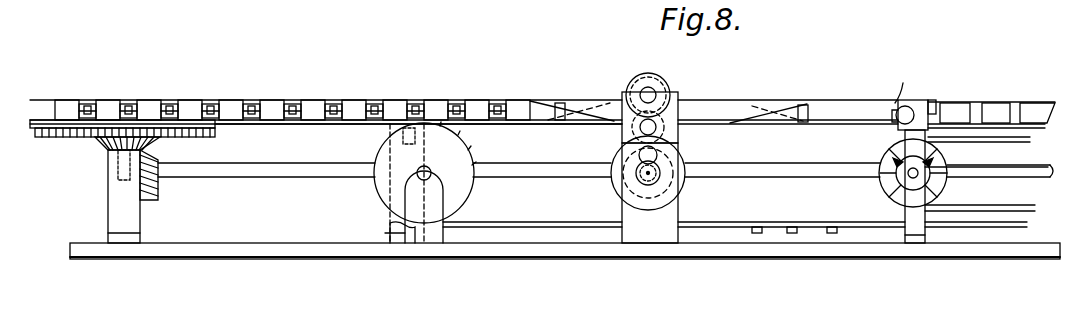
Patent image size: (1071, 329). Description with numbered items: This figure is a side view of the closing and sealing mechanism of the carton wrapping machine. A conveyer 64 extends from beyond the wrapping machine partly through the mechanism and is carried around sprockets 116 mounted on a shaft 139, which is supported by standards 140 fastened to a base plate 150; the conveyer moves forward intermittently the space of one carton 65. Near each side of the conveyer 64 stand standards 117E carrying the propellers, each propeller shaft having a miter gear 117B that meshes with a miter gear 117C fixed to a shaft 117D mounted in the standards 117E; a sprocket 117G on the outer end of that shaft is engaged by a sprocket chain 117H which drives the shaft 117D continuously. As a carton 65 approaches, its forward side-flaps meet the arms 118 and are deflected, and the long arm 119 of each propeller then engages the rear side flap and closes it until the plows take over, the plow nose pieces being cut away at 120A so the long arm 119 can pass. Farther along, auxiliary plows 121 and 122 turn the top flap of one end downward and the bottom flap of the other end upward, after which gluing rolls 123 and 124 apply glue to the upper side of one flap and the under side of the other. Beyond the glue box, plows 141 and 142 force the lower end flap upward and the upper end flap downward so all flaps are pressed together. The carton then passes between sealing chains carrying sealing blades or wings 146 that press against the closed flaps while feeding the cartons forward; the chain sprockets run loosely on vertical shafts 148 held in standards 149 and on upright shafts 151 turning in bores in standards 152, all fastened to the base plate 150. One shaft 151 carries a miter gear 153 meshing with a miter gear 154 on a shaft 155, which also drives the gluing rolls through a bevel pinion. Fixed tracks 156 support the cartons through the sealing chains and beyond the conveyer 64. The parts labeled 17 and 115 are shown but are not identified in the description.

The rail strip 17 is at (38, 130).
The conveyer 64 is at (1040, 130).
The carton 65 is at (1030, 103).
The support block 115 is at (832, 233).
The sprockets 116 is at (463, 160).
The miter gear 117B is at (895, 160).
The miter gear 117C is at (895, 178).
The shaft 117D is at (920, 180).
The standards 117E is at (905, 225).
The sprocket 117G is at (943, 162).
The sprocket chain 117H is at (1012, 145).
The arms 118 is at (915, 110).
The long arm 119 is at (932, 108).
The cut-away 120A is at (895, 105).
The auxiliary plow 121 is at (808, 106).
The auxiliary plow 122 is at (754, 104).
The gluing roll 123 is at (668, 95).
The gluing roll 124 is at (660, 128).
The shaft 139 is at (432, 176).
The standards 140 is at (432, 212).
The plow 141 is at (562, 102).
The plow 142 is at (592, 106).
The sealing blades or wings 146 is at (318, 104).
The vertical shafts 148 is at (410, 143).
The standards 149 is at (400, 231).
The base plate 150 is at (308, 250).
The upright shafts 151 is at (118, 172).
The standards 152 is at (112, 218).
The miter gear 153 is at (100, 140).
The miter gear 154 is at (155, 200).
The shaft 155 is at (203, 165).
The tracks 156 is at (284, 124).